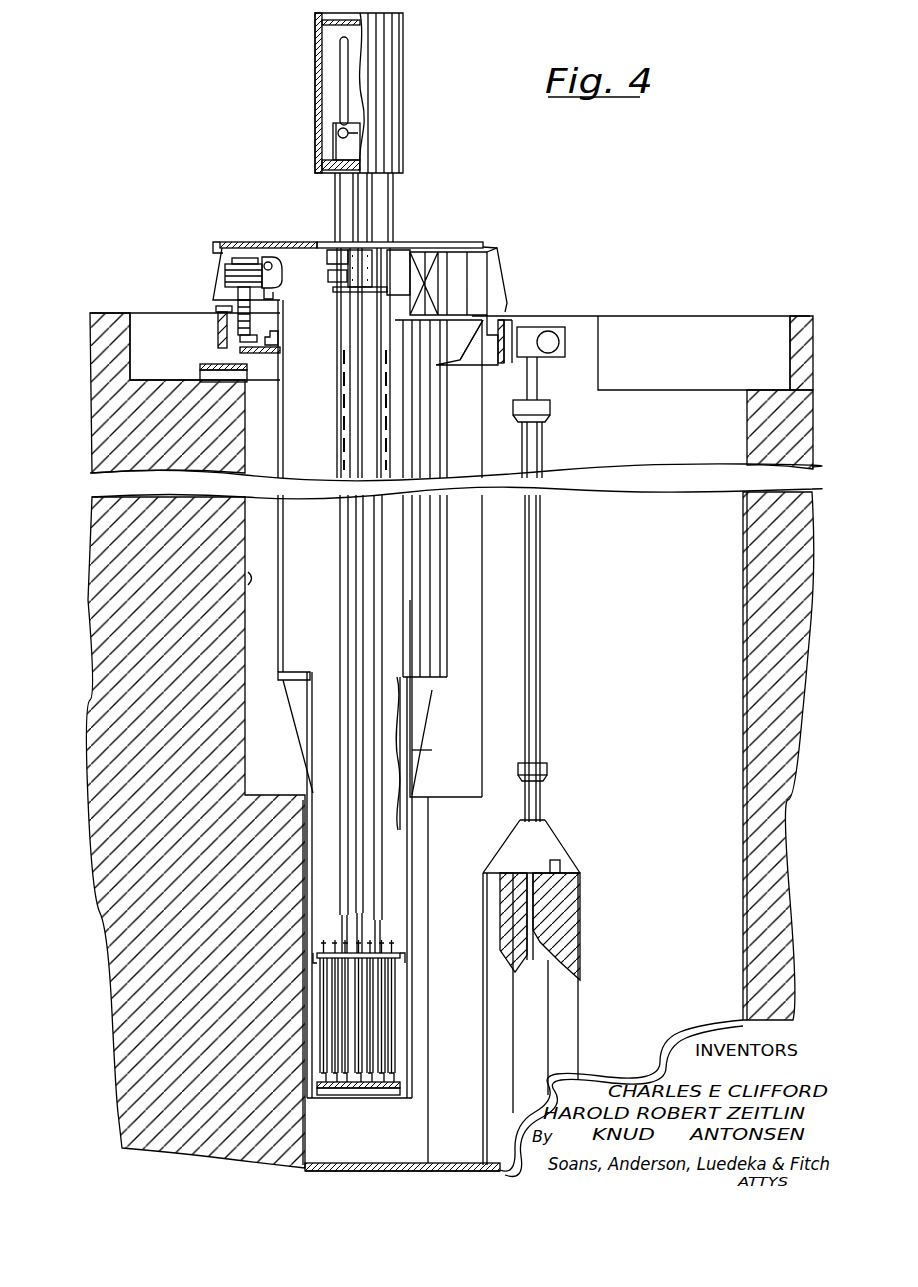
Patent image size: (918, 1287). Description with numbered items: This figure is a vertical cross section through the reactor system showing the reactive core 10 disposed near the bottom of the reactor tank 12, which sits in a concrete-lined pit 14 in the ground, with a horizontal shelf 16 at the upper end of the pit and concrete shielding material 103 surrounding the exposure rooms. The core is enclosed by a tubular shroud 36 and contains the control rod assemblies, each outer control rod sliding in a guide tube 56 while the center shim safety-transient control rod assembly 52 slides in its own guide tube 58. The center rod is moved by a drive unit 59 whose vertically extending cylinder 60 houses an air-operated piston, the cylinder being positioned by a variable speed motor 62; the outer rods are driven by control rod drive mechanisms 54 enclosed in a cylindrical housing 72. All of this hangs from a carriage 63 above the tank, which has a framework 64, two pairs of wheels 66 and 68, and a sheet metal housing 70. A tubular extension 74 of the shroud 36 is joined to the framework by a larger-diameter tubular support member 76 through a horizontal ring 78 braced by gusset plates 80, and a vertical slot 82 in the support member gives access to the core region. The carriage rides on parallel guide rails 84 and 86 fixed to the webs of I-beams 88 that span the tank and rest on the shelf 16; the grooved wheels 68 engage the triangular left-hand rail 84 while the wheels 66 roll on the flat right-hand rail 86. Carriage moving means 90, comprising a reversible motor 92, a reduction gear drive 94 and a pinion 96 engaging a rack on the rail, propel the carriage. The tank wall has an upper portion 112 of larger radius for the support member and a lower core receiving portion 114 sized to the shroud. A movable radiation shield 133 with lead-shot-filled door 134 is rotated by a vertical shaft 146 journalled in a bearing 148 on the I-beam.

The reactive core 10 is at (413, 986).
The reactor tank 12 is at (438, 830).
The pit 14 is at (745, 806).
The horizontal shelf 16 is at (130, 364).
The tubular shroud 36 is at (413, 1016).
The control rod assembly 52 is at (368, 914).
The control rod drive mechanisms 54 is at (340, 130).
The guide tube 56 is at (343, 918).
The guide tube 58 is at (364, 932).
The drive unit 59 is at (375, 246).
The cylinder 60 is at (370, 193).
The variable speed motor 62 is at (340, 281).
The carriage 63 is at (470, 243).
The framework 64 is at (495, 252).
The wheels 66 is at (497, 318).
The wheels 68 is at (220, 306).
The housing 70 is at (226, 242).
The cylindrical housing 72 is at (403, 30).
The tubular extension 74 is at (416, 731).
The tubular support member 76 is at (449, 608).
The ring 78 is at (290, 692).
The gusset plates 80 is at (300, 745).
The slot 82 is at (395, 551).
The guide rail 84 is at (240, 350).
The guide rail 86 is at (523, 330).
The I-beam 88 is at (216, 328).
The carriage moving means 90 is at (266, 256).
The reversible motor 92 is at (284, 280).
The reduction gear drive 94 is at (274, 296).
The pinion 96 is at (272, 334).
The shielding material 103 is at (122, 1013).
The portion 112 is at (256, 591).
The core receiving portion 114 is at (310, 1147).
The radiation shield 133 is at (566, 827).
The door 134 is at (580, 969).
The vertical shaft 146 is at (541, 656).
The bearings 148 is at (566, 348).